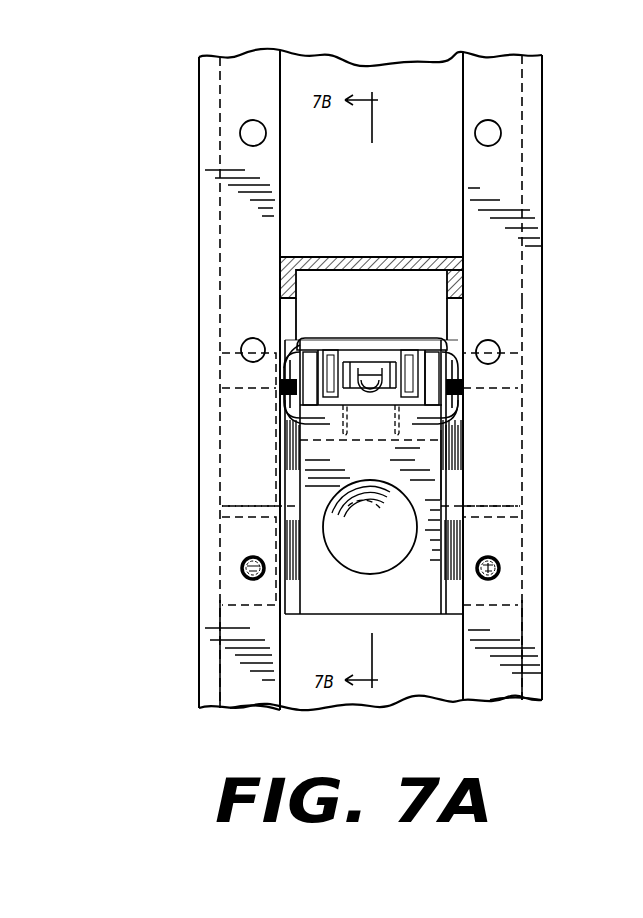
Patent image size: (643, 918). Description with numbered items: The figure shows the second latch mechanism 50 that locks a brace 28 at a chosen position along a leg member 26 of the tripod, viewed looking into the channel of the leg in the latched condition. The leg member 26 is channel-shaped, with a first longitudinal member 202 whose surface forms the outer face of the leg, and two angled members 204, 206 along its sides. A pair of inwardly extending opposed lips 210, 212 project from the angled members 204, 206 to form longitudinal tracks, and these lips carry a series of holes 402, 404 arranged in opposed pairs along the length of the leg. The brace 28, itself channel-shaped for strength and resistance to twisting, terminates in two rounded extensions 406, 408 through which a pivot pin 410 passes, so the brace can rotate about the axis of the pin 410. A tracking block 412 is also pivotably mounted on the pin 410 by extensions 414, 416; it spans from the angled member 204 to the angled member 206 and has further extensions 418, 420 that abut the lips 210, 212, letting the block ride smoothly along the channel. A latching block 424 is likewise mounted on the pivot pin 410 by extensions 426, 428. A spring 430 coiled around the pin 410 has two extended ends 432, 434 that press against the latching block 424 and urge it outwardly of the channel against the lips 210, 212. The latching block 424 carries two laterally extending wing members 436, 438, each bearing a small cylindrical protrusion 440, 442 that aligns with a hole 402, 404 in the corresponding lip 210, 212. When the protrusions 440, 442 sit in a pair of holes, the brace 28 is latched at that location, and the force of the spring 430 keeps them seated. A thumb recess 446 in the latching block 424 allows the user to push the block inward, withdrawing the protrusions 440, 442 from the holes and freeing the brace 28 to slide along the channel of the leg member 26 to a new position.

The leg member 26 is at (312, 68).
The brace 28 is at (284, 313).
The second latch mechanism 50 is at (574, 391).
The first longitudinal member 202 is at (398, 687).
The angled member 204 is at (203, 660).
The angled member 206 is at (535, 646).
The lip 210 is at (252, 698).
The lip 212 is at (505, 697).
The hole 402 is at (243, 133).
The hole 404 is at (498, 133).
The rounded extension 406 is at (286, 370).
The rounded extension 408 is at (452, 382).
The pivot pin 410 is at (376, 362).
The tracking block 412 is at (470, 455).
The extension 414 is at (287, 405).
The extension 416 is at (440, 330).
The further extension 418 is at (240, 483).
The further extension 420 is at (495, 488).
The latching block 424 is at (352, 598).
The extension 426 is at (290, 342).
The extension 428 is at (452, 342).
The spring 430 is at (365, 370).
The extended end 432 is at (280, 452).
The extended end 434 is at (465, 428).
The wing member 436 is at (245, 535).
The wing member 438 is at (490, 537).
The protrusion 440 is at (244, 576).
The protrusion 442 is at (497, 576).
The thumb recess 446 is at (368, 552).